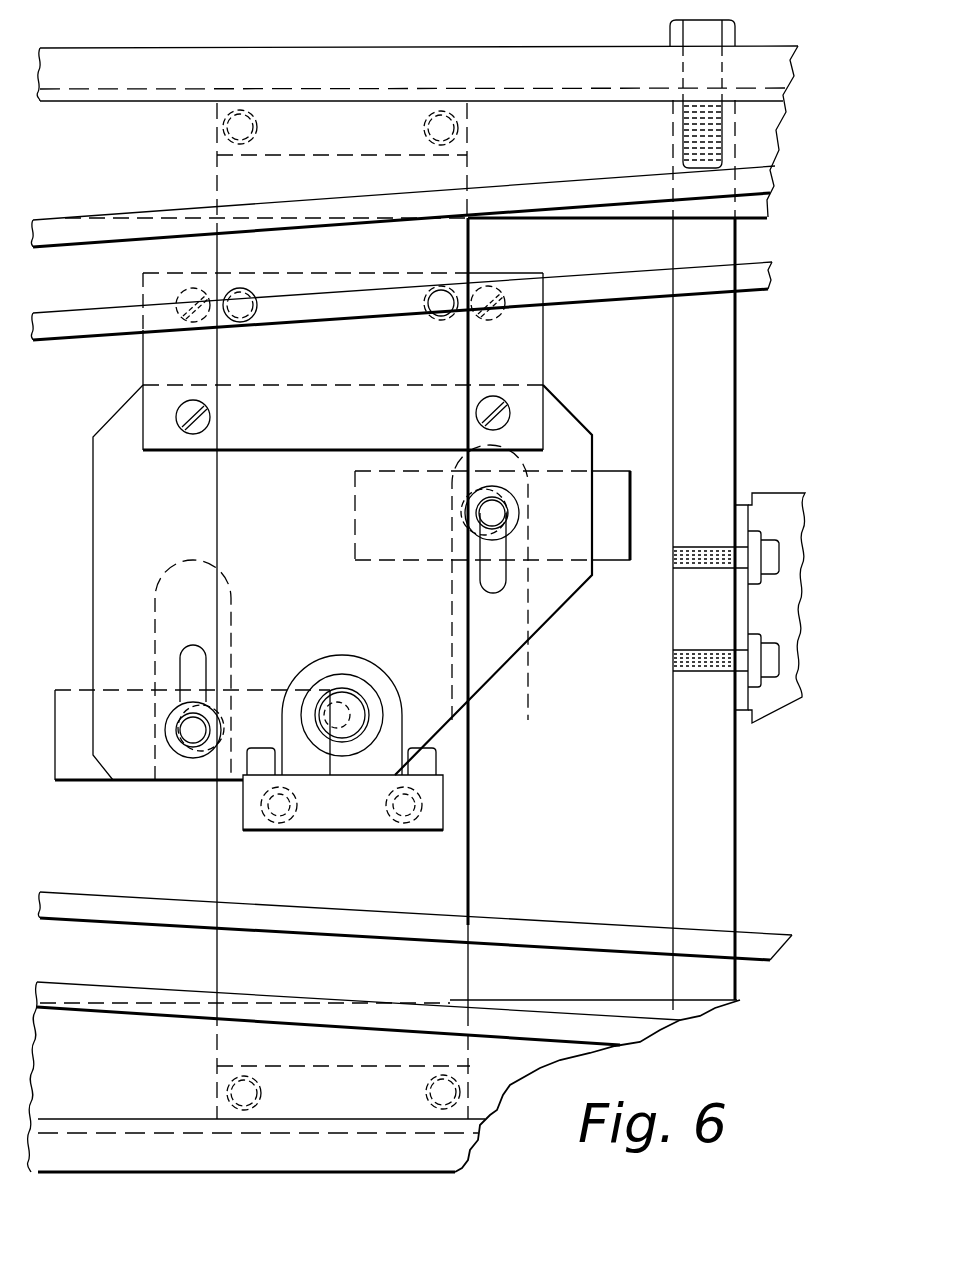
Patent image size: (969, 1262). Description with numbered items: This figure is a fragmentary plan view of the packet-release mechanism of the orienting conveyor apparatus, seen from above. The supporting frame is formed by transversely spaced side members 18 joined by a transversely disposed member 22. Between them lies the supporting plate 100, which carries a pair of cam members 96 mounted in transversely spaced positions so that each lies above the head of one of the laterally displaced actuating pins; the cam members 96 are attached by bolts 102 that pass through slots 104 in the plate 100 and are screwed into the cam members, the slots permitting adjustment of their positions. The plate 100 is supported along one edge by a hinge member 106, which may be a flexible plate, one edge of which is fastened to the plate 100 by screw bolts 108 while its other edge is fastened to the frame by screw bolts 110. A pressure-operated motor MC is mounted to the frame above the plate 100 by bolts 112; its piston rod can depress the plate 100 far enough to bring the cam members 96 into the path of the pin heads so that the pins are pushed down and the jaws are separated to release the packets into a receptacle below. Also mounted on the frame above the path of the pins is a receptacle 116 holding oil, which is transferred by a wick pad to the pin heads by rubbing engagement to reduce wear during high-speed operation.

The side member 18 is at (117, 104).
The transversely disposed member 22 is at (678, 875).
The cam member 96 is at (78, 778).
The supporting plate 100 is at (98, 532).
The bolt 102 is at (188, 750).
The slot 104 is at (183, 667).
The hinge member 106 is at (147, 360).
The screw bolt 108 is at (178, 420).
The screw bolt 110 is at (178, 298).
The bolt 112 is at (290, 820).
The receptacle 116 is at (786, 706).
The motor MC is at (362, 690).